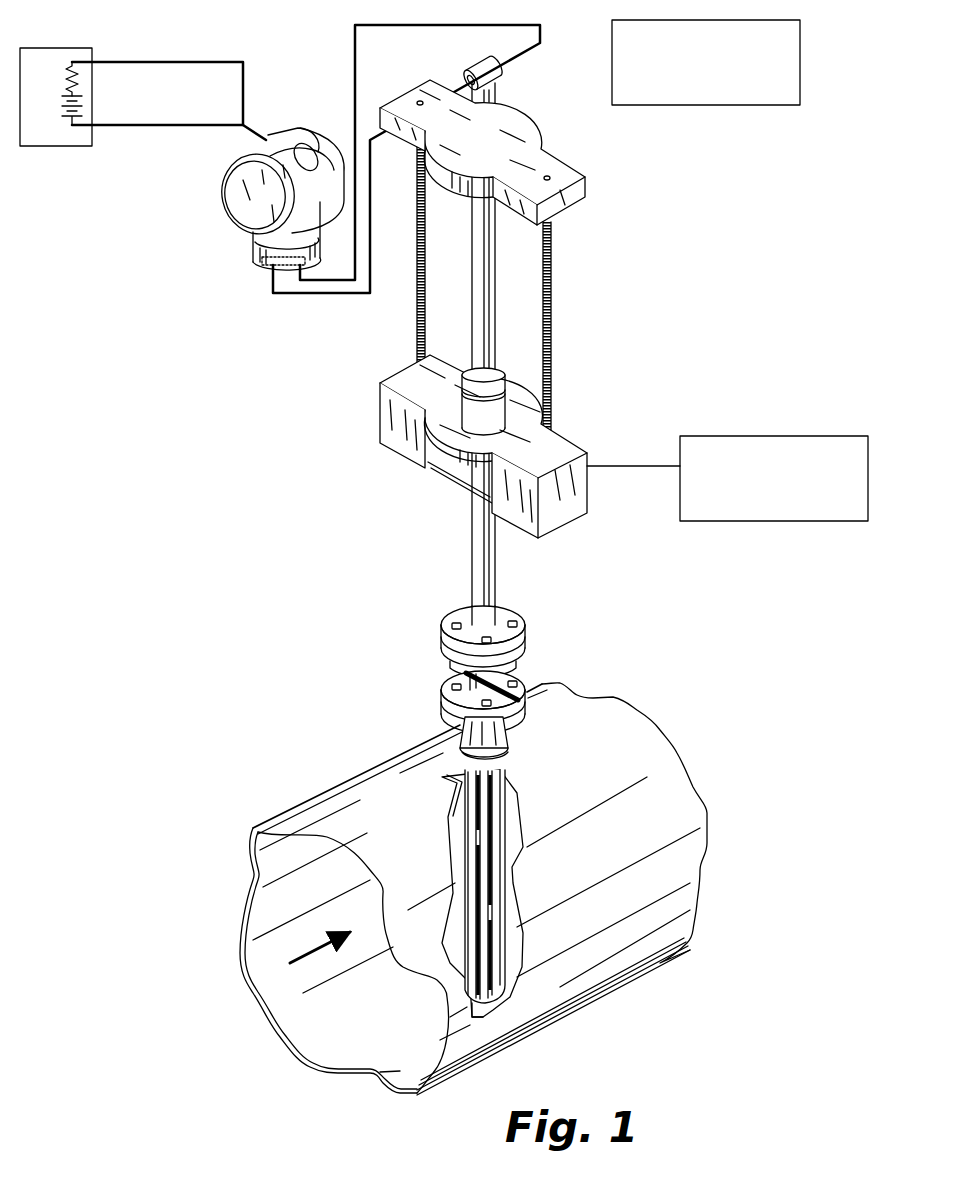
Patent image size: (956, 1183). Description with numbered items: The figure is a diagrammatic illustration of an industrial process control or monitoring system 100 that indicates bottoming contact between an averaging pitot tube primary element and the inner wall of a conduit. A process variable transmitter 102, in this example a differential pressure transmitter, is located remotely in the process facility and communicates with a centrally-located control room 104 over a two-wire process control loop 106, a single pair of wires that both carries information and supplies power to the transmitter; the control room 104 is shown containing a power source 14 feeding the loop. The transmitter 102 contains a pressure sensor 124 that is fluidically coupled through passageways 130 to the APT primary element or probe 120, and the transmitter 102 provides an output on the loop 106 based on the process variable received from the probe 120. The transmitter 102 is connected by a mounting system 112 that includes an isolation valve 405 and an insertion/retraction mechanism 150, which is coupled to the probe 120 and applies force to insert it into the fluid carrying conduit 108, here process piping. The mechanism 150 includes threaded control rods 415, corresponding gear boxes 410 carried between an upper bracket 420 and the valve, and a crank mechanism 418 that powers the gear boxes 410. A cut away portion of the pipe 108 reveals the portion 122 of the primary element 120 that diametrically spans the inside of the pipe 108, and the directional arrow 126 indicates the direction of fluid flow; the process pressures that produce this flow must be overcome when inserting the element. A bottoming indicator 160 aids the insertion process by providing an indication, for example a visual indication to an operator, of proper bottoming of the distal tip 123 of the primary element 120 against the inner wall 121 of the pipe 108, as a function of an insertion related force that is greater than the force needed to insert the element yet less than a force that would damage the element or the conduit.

The power source 14 is at (57, 93).
The control room 104 is at (56, 74).
The two-wire process control loop 106 is at (162, 127).
The process variable transmitter 102 is at (252, 197).
The sensor 124 is at (272, 287).
The passageways 130 is at (328, 295).
The process variable measurement system 100 is at (714, 331).
The insertion/retraction mechanism 150 is at (660, 256).
The mounting system 112 is at (330, 536).
The threaded control rods 415 is at (417, 325).
The upper bracket 420 is at (588, 180).
The bottoming indicator 160 is at (498, 118).
The gear boxes 410 is at (396, 418).
The crank mechanism 418 is at (727, 478).
The isolation valve 405 is at (428, 656).
The APT primary element 120 is at (537, 862).
The portion of APT primary element 122 is at (490, 827).
The distal tip 123 is at (477, 1003).
The fluid carrying conduit 108 is at (442, 897).
The directional arrow 126 is at (303, 953).
The inner wall 121 is at (420, 1067).